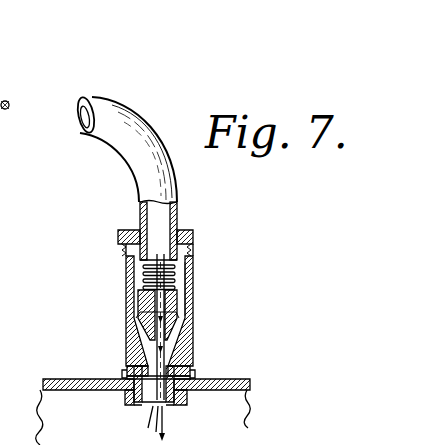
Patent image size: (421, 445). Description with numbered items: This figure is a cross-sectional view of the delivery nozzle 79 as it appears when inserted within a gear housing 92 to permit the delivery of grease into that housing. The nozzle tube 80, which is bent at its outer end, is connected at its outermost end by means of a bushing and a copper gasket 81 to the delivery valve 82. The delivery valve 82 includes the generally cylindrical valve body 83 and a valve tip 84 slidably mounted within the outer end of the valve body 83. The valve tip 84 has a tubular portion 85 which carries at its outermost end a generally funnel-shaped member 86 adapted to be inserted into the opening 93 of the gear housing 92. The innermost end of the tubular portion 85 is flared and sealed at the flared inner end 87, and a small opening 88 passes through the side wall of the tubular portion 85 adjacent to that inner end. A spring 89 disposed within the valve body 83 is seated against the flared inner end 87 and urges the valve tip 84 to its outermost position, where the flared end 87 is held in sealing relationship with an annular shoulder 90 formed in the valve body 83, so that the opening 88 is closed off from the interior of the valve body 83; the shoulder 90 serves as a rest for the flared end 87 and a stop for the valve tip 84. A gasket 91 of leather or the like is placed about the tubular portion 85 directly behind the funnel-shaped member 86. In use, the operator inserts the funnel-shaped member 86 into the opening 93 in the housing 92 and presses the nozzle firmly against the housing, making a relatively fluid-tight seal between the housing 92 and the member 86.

The delivery nozzle 79 is at (143, 120).
The nozzle tube 80 is at (190, 233).
The copper gasket 81 is at (197, 245).
The delivery valve 82 is at (287, 316).
The valve body 83 is at (192, 297).
The valve tip 84 is at (123, 374).
The tubular portion 85 is at (187, 363).
The funnel-shaped member 86 is at (196, 377).
The flared inner end 87 is at (137, 305).
The small opening 88 is at (139, 318).
The spring 89 is at (140, 268).
The annular shoulder 90 is at (167, 312).
The gasket 91 is at (190, 373).
The gear housing 92 is at (128, 367).
The opening 93 is at (147, 408).